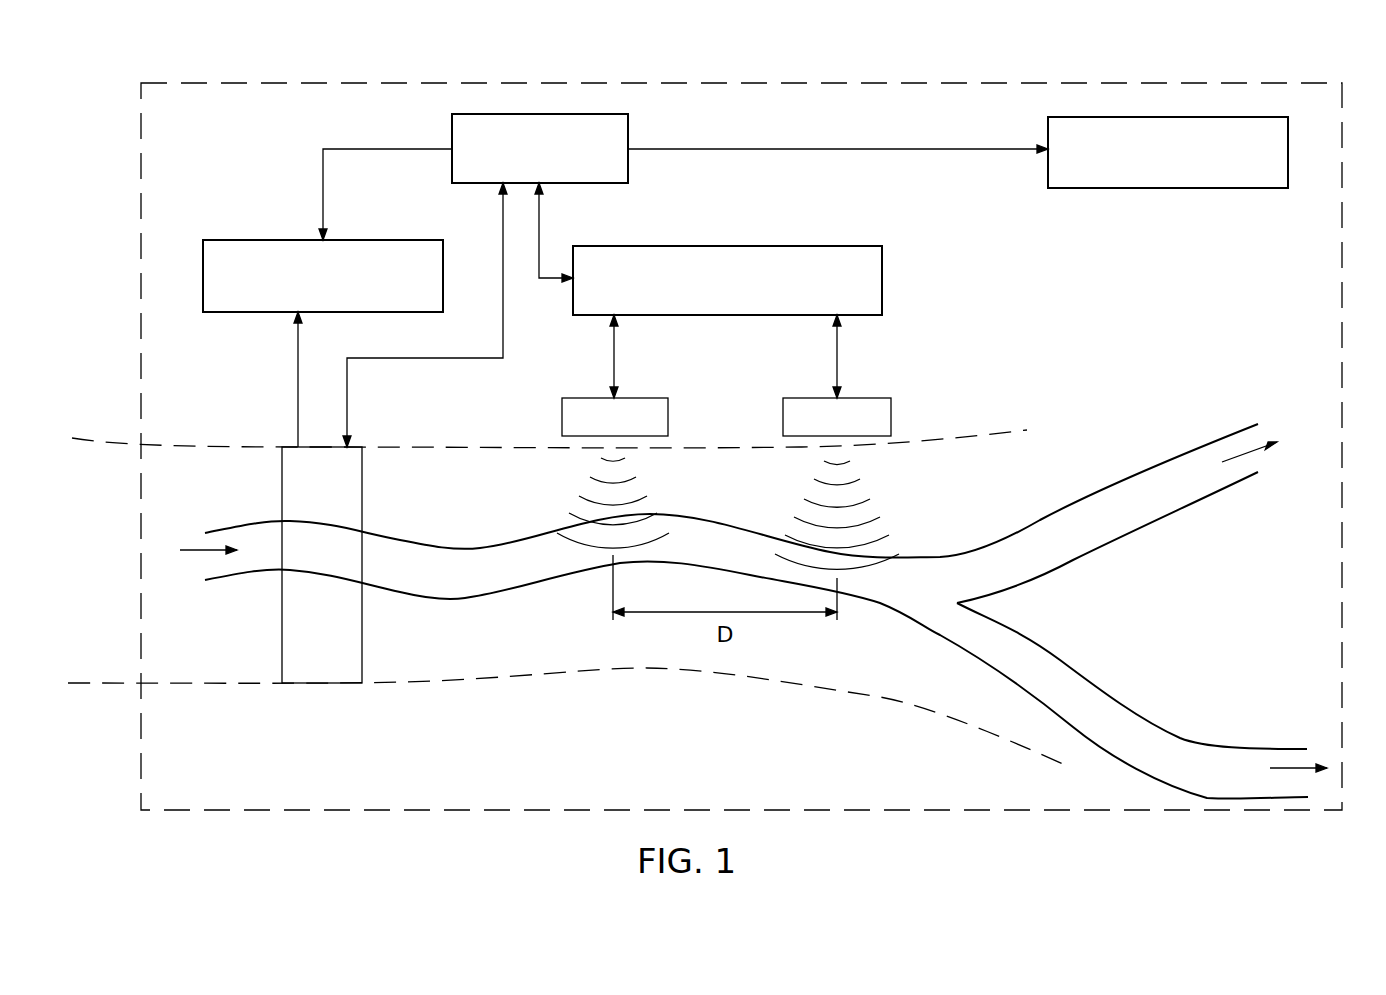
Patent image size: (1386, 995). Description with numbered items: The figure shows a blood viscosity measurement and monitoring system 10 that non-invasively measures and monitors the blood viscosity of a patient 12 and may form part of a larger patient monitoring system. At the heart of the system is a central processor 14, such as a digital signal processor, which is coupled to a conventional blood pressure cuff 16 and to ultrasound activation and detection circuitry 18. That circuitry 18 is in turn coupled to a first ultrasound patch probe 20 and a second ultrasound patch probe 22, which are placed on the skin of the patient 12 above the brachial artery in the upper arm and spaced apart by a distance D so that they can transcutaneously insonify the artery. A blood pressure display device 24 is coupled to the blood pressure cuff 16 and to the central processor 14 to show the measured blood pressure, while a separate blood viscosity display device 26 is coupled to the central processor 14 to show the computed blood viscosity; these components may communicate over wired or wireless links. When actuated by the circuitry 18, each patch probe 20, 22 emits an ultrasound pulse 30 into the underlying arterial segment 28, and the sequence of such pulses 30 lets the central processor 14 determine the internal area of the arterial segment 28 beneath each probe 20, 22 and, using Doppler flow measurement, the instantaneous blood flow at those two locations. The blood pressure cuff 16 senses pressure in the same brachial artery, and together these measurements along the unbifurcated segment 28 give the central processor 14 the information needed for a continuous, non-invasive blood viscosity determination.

The blood viscosity measurement and monitoring system 10 is at (272, 83).
The patient 12 is at (110, 446).
The central processor 14 is at (540, 114).
The blood pressure cuff 16 is at (292, 684).
The ultrasound activation and detection circuitry 18 is at (779, 246).
The first ultrasound patch probe 20 is at (643, 398).
The second ultrasound patch probe 22 is at (866, 398).
The blood pressure display device 24 is at (231, 240).
The blood viscosity display device 26 is at (1288, 152).
The arterial segment 28 is at (497, 598).
The ultrasound pulse 30 is at (862, 503).